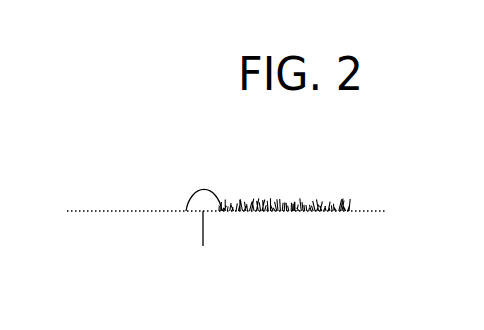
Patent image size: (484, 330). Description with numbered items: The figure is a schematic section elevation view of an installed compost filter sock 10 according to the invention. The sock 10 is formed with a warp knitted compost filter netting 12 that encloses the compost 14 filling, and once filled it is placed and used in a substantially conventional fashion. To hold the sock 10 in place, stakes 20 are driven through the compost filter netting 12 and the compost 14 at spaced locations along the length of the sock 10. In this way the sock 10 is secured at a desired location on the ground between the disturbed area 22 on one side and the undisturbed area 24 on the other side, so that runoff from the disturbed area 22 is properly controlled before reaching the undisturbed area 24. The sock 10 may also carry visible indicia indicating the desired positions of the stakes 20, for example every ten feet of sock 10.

The compost filter sock 10 is at (246, 177).
The compost filter netting 12 is at (186, 194).
The compost 14 is at (200, 190).
The stake 20 is at (206, 188).
The disturbed area 22 is at (136, 211).
The undisturbed area 24 is at (250, 197).